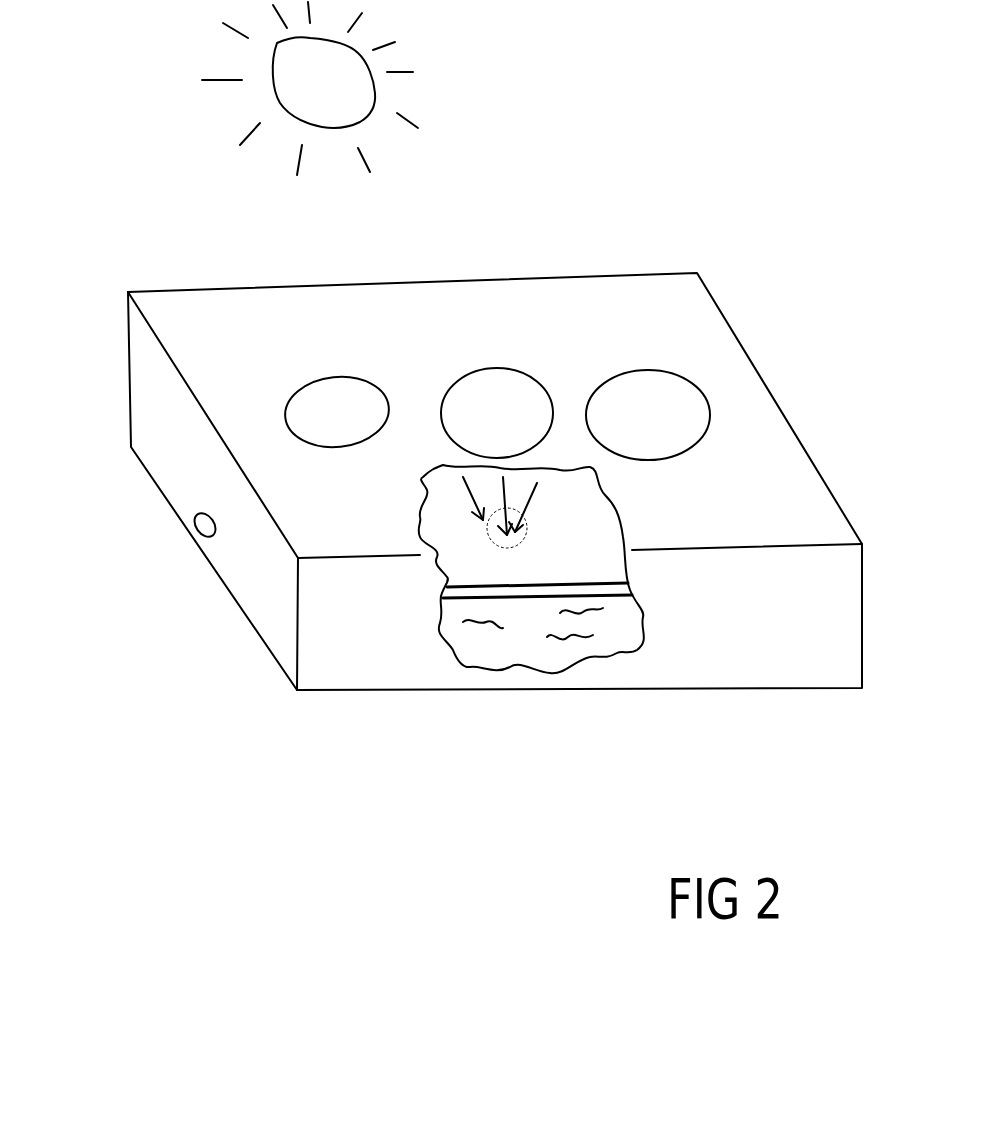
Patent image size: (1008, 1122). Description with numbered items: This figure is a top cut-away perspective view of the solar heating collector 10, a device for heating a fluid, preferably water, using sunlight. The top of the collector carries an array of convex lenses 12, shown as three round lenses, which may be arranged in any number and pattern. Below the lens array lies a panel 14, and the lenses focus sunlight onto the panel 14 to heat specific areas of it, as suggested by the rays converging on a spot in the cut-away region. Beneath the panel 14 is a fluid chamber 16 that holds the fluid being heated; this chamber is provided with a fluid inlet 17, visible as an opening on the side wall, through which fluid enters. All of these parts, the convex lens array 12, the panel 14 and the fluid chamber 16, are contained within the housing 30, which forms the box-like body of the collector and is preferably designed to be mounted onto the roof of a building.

The solar heating collector 10 is at (777, 308).
The array of convex lenses 12 is at (318, 407).
The panel 14 is at (578, 527).
The fluid chamber 16 is at (500, 647).
The fluid inlet 17 is at (177, 534).
The housing 30 is at (148, 402).